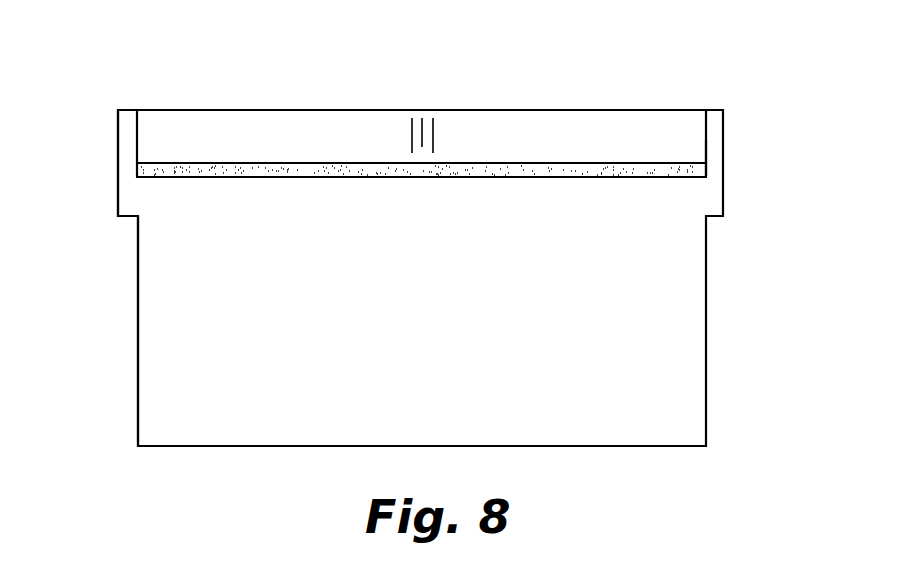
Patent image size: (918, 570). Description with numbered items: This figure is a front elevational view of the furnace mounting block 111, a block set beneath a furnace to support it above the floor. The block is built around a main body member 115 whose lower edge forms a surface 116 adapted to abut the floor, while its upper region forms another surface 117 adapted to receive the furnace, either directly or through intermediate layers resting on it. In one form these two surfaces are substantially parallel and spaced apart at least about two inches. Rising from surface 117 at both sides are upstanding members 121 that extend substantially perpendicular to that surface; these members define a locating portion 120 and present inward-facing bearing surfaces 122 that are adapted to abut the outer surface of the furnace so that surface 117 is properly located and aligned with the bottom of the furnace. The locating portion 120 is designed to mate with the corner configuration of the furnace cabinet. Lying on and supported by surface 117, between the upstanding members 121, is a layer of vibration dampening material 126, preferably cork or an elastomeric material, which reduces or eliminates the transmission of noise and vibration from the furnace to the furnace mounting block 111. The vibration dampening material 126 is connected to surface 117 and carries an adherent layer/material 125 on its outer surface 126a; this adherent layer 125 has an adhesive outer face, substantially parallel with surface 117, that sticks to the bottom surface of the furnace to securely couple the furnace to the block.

The furnace mounting block 111 is at (652, 360).
The main body member 115 is at (155, 310).
The surface adapted for abutting the floor 116 is at (617, 446).
The surface adapted for receiving the furnace 117 is at (706, 167).
The locating portion 120 is at (527, 128).
The upstanding member 121 is at (125, 130).
The bearing surface 122 is at (212, 130).
The adherent layer/material 125 is at (313, 162).
The vibration dampening material 126 is at (665, 168).
The outer surface of the vibration dampening material 126a is at (695, 162).